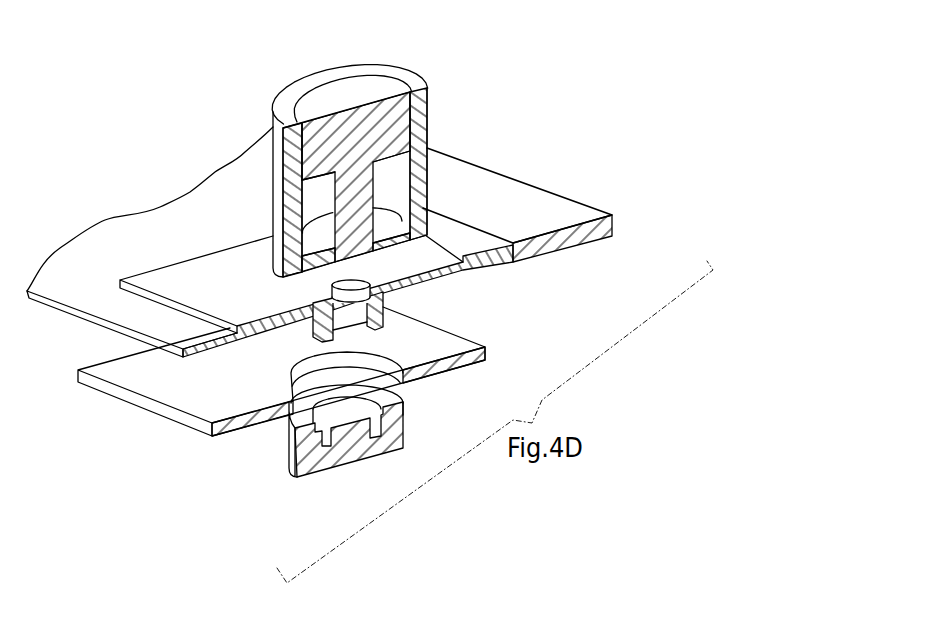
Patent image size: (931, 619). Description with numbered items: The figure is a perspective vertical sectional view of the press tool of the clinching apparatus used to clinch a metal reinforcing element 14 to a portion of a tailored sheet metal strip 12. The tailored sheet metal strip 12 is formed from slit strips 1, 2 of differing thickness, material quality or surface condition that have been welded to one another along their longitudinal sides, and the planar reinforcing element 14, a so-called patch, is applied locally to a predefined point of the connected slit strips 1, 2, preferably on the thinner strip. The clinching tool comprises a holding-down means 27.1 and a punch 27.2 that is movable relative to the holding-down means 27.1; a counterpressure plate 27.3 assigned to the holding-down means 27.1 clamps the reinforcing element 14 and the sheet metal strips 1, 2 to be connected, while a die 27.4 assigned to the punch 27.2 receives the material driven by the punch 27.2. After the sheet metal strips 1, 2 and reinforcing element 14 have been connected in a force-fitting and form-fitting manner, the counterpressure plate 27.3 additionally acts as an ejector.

The slit strip 1 is at (163, 218).
The slit strip 2 is at (518, 197).
The tailored sheet metal strip 12 is at (230, 177).
The reinforcing element 14 is at (150, 277).
The holding-down means 27.1 is at (417, 162).
The punch 27.2 is at (376, 86).
The counterpressure plate 27.3 is at (443, 340).
The die 27.4 is at (305, 466).